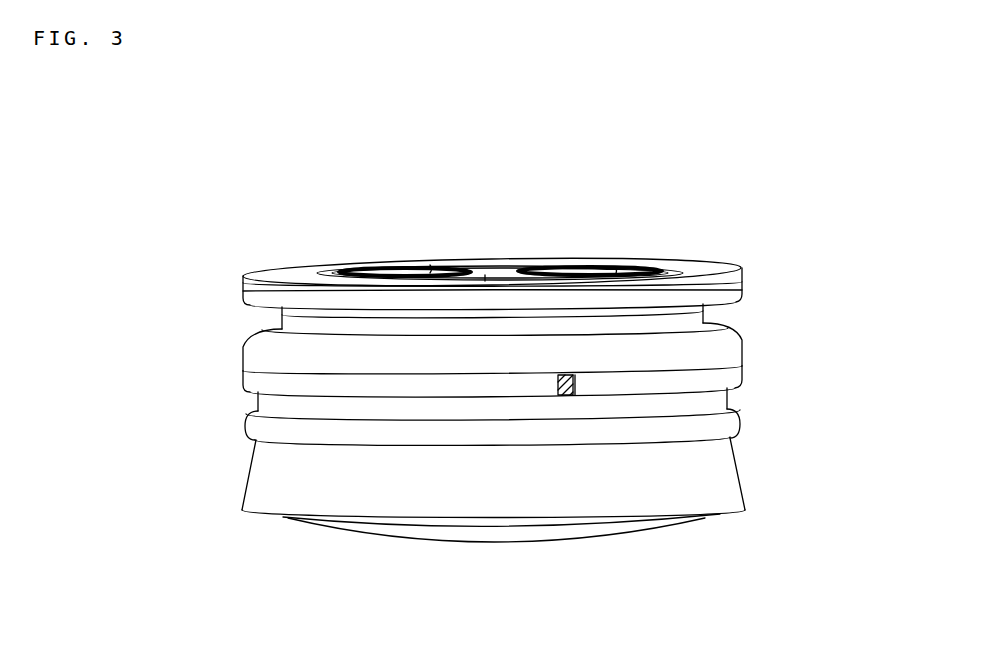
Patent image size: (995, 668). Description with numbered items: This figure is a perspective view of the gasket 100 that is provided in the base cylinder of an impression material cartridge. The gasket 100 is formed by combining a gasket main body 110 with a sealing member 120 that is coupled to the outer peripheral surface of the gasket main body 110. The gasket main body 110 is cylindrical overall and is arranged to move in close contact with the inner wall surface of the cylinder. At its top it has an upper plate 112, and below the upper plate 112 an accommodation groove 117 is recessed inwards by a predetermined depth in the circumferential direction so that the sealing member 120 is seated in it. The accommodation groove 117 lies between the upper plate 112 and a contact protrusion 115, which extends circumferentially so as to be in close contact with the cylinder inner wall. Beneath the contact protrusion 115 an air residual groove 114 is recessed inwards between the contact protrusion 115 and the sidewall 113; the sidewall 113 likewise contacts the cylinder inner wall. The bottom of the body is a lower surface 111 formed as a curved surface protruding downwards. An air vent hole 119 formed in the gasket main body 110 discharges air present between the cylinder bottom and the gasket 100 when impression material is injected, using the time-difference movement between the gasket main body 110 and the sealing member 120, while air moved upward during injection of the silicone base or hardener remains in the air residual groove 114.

The gasket 100 is at (752, 223).
The gasket main body 110 is at (148, 217).
The lower surface 111 is at (478, 538).
The upper plate 112 is at (263, 292).
The sidewall 113 is at (270, 470).
The air residual groove 114 is at (259, 410).
The contact protrusion 115 is at (262, 376).
The accommodation groove 117 is at (293, 321).
The air vent hole 119 is at (565, 373).
The sealing member 120 is at (727, 338).